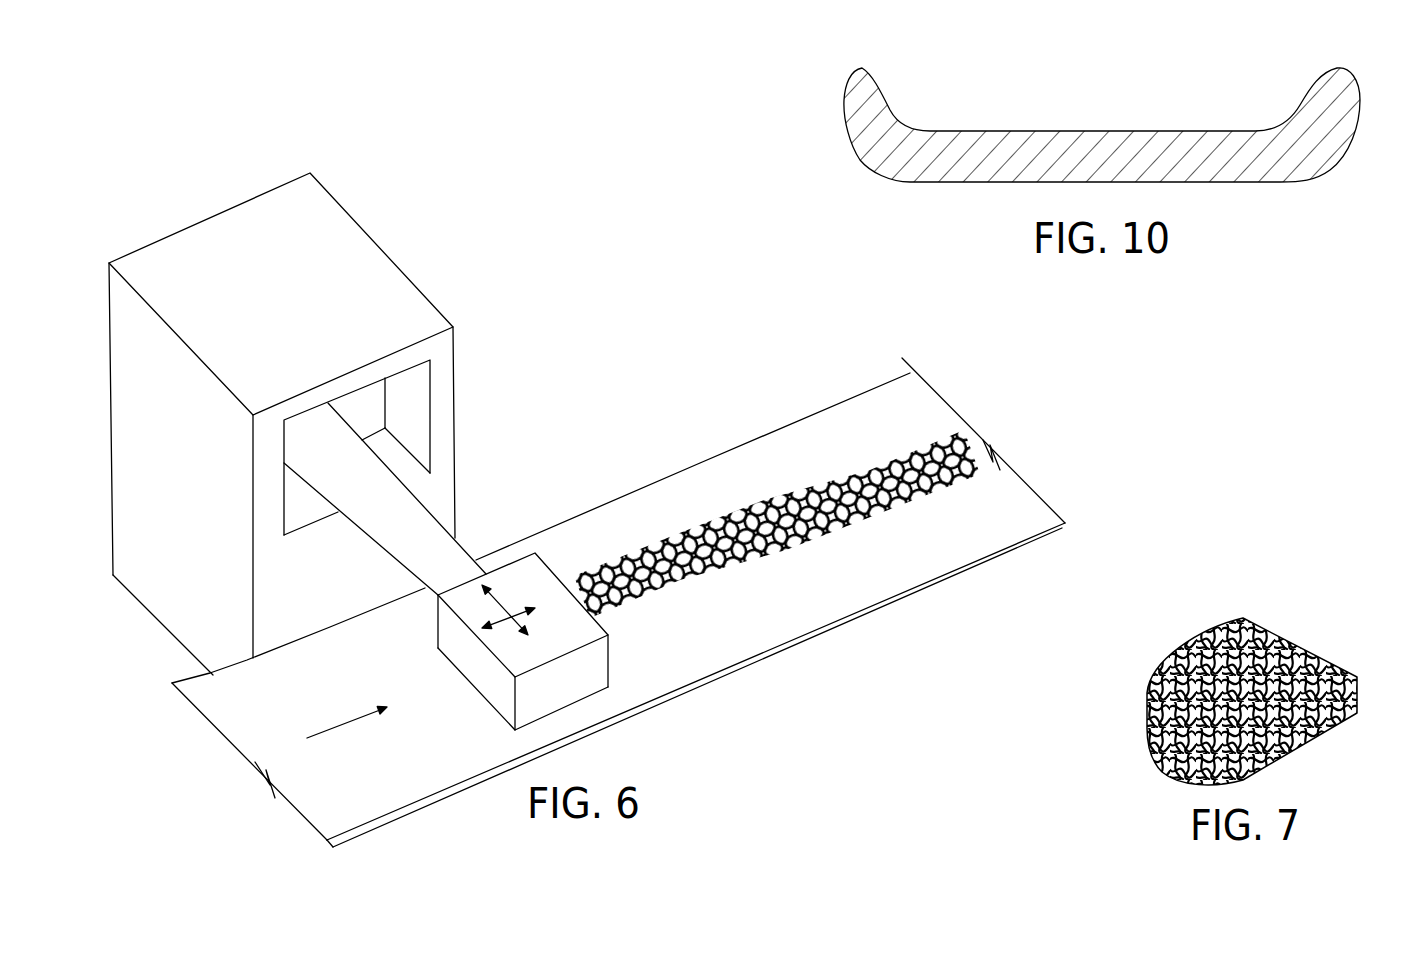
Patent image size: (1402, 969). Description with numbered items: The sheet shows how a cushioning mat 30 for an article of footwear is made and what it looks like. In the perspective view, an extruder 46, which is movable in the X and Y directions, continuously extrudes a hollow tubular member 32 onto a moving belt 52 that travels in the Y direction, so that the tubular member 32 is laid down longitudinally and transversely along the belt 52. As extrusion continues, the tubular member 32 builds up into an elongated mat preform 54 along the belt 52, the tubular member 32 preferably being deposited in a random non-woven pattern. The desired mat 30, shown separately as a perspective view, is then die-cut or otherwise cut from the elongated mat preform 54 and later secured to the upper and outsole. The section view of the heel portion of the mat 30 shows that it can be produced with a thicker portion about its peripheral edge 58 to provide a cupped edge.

In FIG. 10, the mat 30 is at (1297, 180).
In FIG. 7, the mat 30 is at (1337, 637).
In FIG. 6, the tubular member 32 is at (727, 577).
In FIG. 7, the tubular member 32 is at (1275, 635).
In FIG. 6, the extruder 46 is at (602, 665).
In FIG. 6, the belt 52 is at (373, 783).
In FIG. 6, the elongated mat preform 54 is at (823, 547).
In FIG. 10, the peripheral edge 58 is at (860, 67).